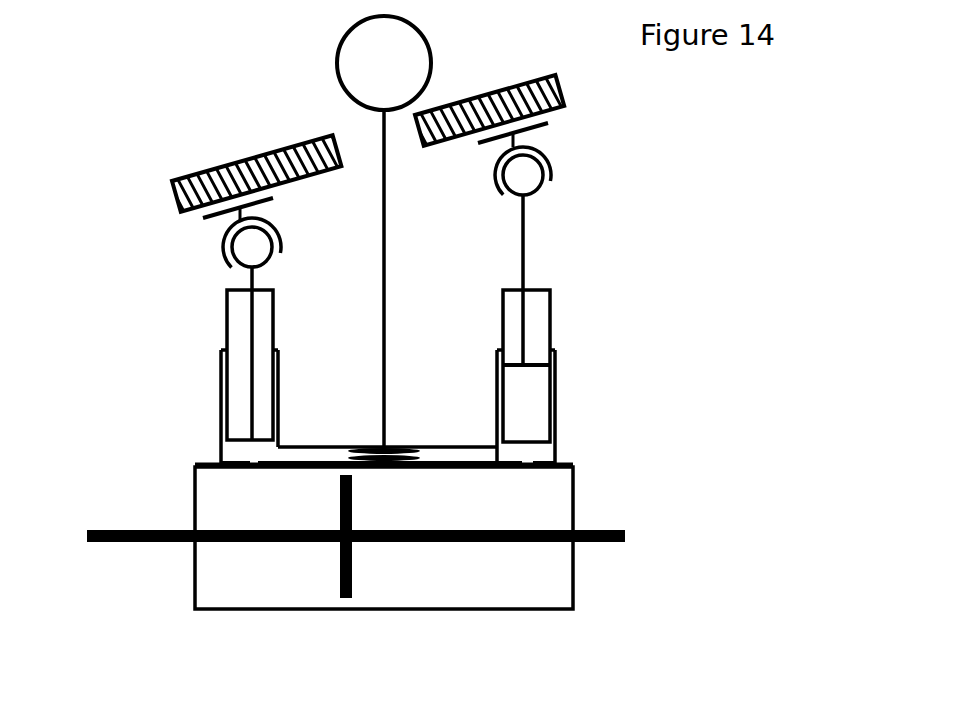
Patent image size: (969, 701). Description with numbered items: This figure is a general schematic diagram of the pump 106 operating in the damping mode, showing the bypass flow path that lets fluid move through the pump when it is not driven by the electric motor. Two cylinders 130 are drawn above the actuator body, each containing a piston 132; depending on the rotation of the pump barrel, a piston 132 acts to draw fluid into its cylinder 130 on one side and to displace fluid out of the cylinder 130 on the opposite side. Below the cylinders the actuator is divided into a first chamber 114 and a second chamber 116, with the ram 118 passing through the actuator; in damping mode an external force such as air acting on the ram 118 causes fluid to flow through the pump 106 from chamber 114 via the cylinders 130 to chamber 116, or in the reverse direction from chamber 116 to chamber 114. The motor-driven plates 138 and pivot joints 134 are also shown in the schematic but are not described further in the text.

The pump 106 is at (140, 130).
The hatched plate 138 is at (173, 200).
The pivot joint 134 is at (553, 170).
The piston 132 is at (525, 328).
The cylinder 130 is at (545, 452).
The ram 118 is at (605, 528).
The chamber 116 is at (550, 577).
The chamber 114 is at (213, 563).